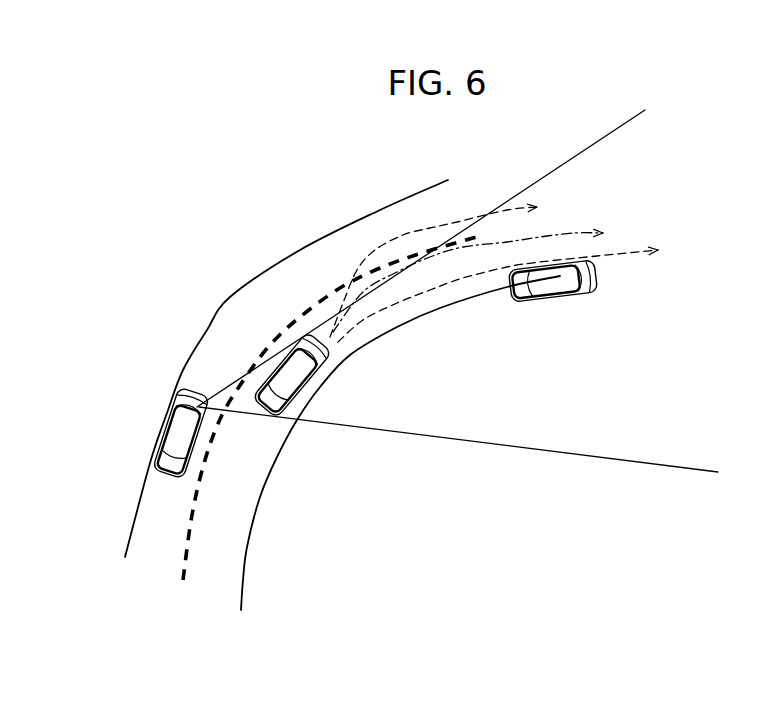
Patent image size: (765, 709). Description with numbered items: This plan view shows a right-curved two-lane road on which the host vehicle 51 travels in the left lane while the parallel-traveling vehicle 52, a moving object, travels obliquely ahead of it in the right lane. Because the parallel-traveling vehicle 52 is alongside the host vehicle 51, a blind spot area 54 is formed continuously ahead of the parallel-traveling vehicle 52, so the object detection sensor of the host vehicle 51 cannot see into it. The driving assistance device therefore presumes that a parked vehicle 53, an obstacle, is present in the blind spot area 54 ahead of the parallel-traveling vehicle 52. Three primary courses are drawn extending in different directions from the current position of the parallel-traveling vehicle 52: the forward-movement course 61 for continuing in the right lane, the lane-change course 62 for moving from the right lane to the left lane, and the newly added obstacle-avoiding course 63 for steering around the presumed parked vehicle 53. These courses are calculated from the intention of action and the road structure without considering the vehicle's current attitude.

The host vehicle 51 is at (165, 450).
The parallel-traveling vehicle 52 is at (300, 420).
The parked vehicle 53 is at (516, 305).
The blind spot area 54 is at (698, 472).
The forward-movement course 61 is at (628, 258).
The lane-change course 62 is at (468, 210).
The obstacle-avoiding course 63 is at (567, 234).